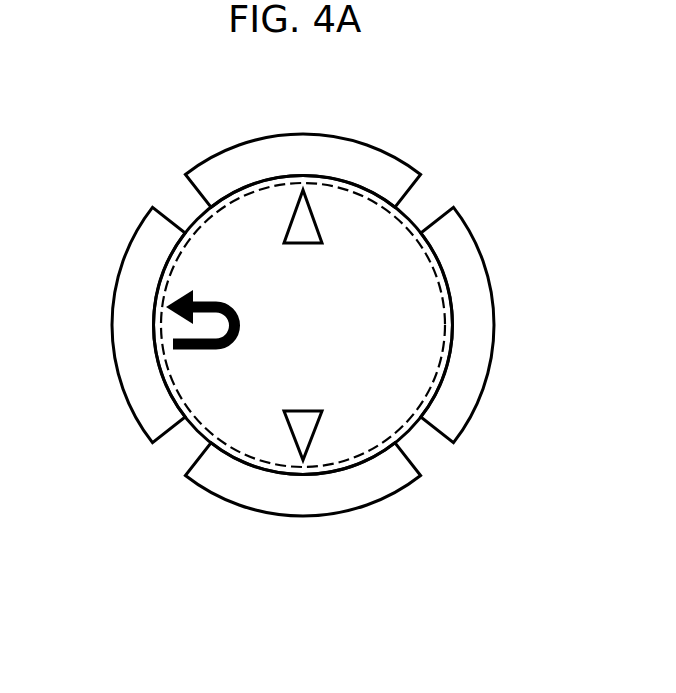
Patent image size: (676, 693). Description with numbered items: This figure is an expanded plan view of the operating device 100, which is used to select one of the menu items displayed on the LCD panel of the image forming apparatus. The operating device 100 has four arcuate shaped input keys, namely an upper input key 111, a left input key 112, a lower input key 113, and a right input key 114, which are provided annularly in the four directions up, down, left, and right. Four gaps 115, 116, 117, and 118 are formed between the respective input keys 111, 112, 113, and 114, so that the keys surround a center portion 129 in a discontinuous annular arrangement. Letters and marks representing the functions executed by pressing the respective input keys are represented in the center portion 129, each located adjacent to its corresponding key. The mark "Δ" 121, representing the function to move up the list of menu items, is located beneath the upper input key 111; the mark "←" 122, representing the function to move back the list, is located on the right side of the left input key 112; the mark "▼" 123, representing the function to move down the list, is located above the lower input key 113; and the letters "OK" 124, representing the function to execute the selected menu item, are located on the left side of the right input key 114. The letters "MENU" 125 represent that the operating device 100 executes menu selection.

The operating device 100 is at (392, 106).
The upper input key 111 is at (305, 133).
The left input key 112 is at (113, 324).
The lower input key 113 is at (390, 498).
The right input key 114 is at (495, 322).
The gap 115 is at (178, 203).
The gap 116 is at (182, 452).
The gap 117 is at (428, 452).
The gap 118 is at (422, 203).
The mark "Δ" 121 is at (290, 236).
The mark "←" 122 is at (207, 350).
The mark "▼" 123 is at (292, 433).
The letters "OK" 124 is at (392, 298).
The letters "MENU" 125 is at (291, 604).
The center portion 129 is at (442, 373).